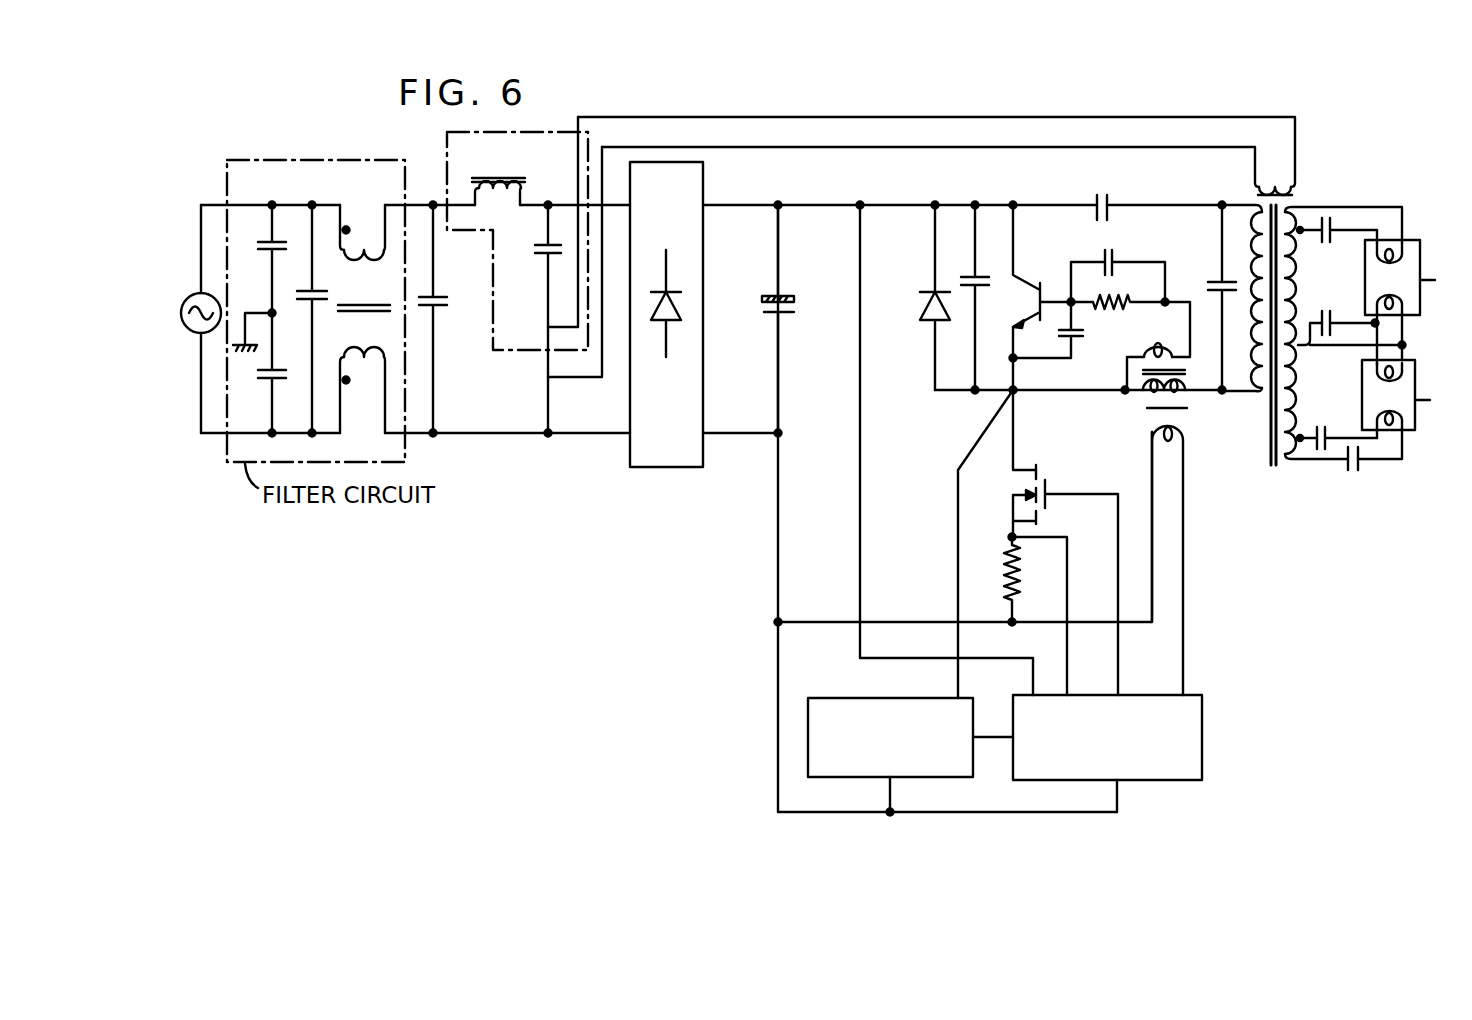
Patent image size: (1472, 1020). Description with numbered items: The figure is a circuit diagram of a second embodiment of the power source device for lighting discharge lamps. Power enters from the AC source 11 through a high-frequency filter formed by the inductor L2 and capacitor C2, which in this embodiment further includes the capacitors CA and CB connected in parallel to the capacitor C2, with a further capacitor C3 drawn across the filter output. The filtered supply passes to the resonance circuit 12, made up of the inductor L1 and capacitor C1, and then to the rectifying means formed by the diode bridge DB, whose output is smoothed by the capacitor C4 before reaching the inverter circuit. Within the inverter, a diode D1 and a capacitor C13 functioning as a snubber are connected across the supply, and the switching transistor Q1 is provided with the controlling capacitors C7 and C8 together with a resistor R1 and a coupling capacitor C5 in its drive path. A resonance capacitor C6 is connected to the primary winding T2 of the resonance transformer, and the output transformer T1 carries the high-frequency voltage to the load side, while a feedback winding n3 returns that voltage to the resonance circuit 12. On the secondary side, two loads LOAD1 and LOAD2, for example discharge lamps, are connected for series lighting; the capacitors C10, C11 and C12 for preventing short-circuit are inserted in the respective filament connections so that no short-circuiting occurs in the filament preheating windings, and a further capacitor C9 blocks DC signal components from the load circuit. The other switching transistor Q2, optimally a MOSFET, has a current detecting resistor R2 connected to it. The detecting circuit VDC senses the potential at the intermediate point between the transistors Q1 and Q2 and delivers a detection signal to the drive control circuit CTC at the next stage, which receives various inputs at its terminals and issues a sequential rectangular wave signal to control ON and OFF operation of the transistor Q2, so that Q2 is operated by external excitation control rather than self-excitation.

The AC source 11 is at (186, 332).
The resonance circuit 12 is at (543, 132).
The capacitor CA is at (259, 277).
The capacitor CB is at (261, 375).
The capacitor C2 is at (322, 319).
The inductor L2 is at (364, 308).
The capacitor C3 is at (452, 319).
The inductor L1 is at (498, 174).
The capacitor C1 is at (533, 319).
The diode bridge DB is at (666, 336).
The electrolytic capacitor C4 is at (800, 318).
The diode D1 is at (915, 296).
The capacitor C13 is at (995, 298).
The switching transistor Q1 is at (1042, 298).
The capacitor C5 is at (1101, 191).
The controlling capacitor C7 is at (1118, 268).
The resistor R1 is at (1120, 321).
The controlling capacitor C8 is at (1063, 339).
The resonance capacitor C6 is at (1209, 297).
The primary winding T2 is at (1180, 498).
The output transformer T1 is at (1312, 358).
The feedback winding n3 is at (1296, 184).
The capacitor C12 is at (1337, 252).
The capacitor C11 is at (1352, 317).
The capacitor C10 is at (1337, 423).
The capacitor C9 is at (1343, 479).
The load LOAD1 is at (1418, 298).
The load LOAD2 is at (1417, 409).
The switching transistor Q2 is at (1038, 544).
The current detecting resistor R2 is at (1035, 615).
The detecting circuit VDC is at (910, 740).
The drive control circuit CTC is at (1138, 745).